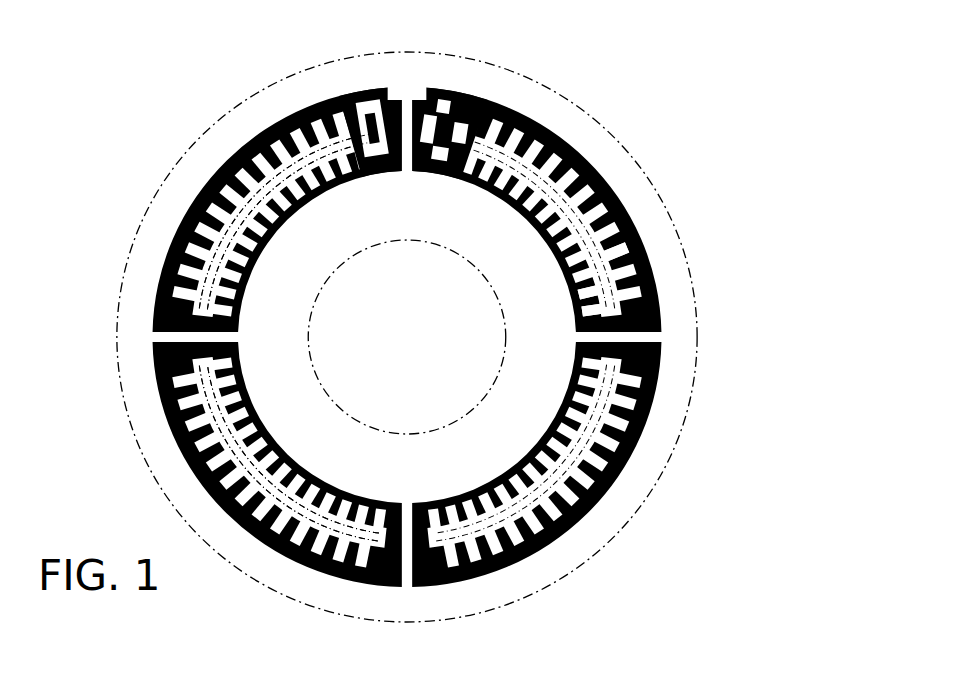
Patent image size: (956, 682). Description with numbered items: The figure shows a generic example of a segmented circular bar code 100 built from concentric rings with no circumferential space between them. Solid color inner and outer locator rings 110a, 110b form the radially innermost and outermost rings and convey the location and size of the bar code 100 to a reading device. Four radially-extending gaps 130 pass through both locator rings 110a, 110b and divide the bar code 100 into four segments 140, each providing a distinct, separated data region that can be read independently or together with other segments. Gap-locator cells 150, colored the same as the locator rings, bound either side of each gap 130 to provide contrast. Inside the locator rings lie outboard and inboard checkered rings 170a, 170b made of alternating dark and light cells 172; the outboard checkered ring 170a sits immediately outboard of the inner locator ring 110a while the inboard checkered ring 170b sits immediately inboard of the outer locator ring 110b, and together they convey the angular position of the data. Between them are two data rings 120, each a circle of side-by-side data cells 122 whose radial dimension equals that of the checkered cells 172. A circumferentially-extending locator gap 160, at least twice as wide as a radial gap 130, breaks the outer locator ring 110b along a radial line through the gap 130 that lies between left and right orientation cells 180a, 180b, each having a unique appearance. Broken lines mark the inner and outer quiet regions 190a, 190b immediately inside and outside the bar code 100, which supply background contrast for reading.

The segmented circular bar code 100 is at (172, 126).
The inner locator ring 110a is at (503, 475).
The outer locator ring 110b is at (566, 150).
The data ring 120 is at (609, 246).
The data cell 122 is at (614, 284).
The radially-extending gap 130 is at (408, 578).
The segment 140 is at (606, 489).
The gap-locator cell 150 is at (172, 323).
The locator gap 160 is at (404, 86).
The outboard checkered ring 170a is at (228, 278).
The inboard checkered ring 170b is at (200, 233).
The alternating dark and light cell 172 is at (196, 250).
The left orientation cell 180a is at (366, 132).
The right orientation cell 180b is at (446, 125).
The inner quiet region 190a is at (308, 417).
The outer quiet region 190b is at (688, 421).